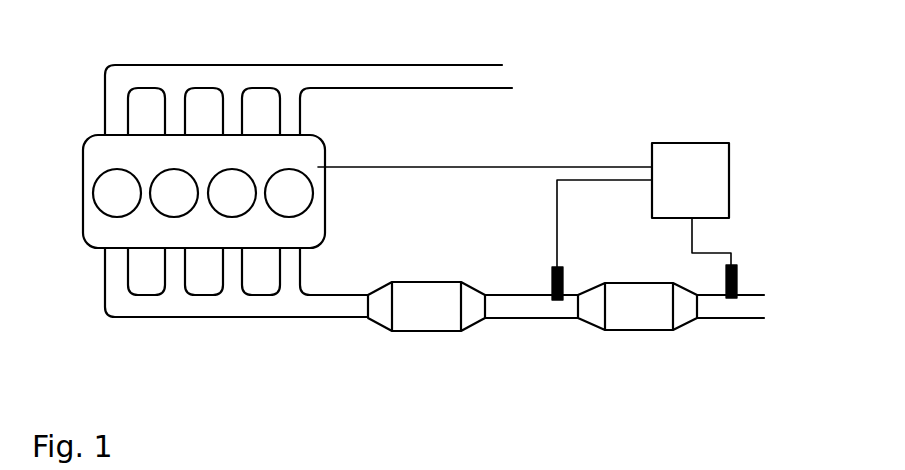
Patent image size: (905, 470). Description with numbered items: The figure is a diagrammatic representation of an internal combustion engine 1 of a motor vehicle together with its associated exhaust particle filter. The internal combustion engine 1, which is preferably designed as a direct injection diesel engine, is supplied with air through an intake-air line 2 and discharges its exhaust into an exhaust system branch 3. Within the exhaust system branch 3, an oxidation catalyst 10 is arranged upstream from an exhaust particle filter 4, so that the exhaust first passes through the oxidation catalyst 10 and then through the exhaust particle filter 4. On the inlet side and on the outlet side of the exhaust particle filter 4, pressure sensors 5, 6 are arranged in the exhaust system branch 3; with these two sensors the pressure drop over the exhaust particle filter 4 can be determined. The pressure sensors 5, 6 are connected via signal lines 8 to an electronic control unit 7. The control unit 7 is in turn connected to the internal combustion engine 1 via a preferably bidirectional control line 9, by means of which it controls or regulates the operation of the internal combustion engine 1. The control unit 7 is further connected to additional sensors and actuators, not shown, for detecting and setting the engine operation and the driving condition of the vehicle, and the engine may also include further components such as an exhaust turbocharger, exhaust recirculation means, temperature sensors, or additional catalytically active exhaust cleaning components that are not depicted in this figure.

The internal combustion engine 1 is at (102, 233).
The intake-air line 2 is at (353, 77).
The exhaust system branch 3 is at (505, 307).
The exhaust particle filter 4 is at (630, 315).
The pressure sensor 5 is at (562, 300).
The pressure sensor 6 is at (735, 300).
The electronic control unit 7 is at (720, 167).
The signal lines 8 is at (688, 237).
The control line 9 is at (505, 166).
The oxidation catalyst 10 is at (420, 313).